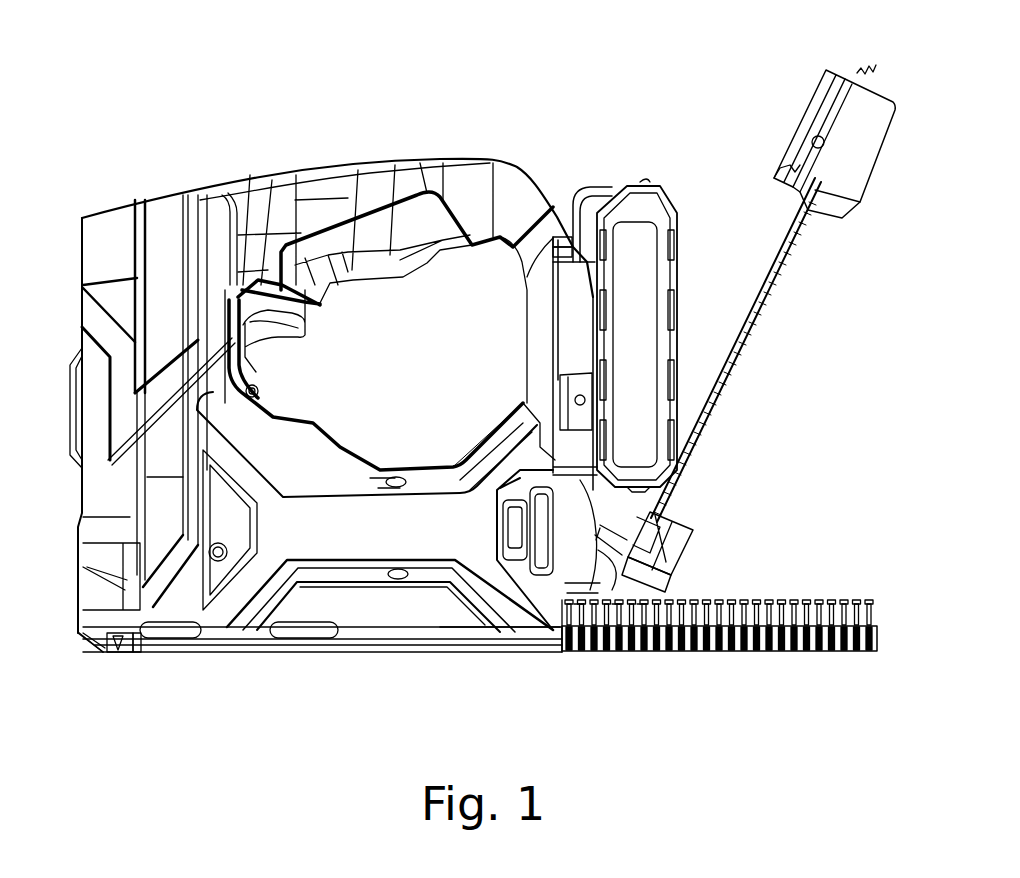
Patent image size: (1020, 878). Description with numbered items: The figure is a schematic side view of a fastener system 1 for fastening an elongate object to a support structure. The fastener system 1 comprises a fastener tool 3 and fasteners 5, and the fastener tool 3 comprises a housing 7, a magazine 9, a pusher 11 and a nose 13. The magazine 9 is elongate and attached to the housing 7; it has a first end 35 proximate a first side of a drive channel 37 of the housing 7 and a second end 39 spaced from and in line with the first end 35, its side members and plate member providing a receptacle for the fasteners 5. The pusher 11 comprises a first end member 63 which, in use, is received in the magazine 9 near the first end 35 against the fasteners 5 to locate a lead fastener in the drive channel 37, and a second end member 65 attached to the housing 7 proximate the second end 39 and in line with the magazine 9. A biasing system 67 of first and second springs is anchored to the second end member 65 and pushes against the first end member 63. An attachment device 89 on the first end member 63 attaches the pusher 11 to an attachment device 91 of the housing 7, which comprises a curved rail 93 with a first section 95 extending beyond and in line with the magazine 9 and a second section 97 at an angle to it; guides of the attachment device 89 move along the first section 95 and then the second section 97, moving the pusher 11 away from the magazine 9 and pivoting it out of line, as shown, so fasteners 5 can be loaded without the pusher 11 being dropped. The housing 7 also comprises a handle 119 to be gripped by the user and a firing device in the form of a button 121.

The fastener system 1 is at (165, 92).
The fastener tool 3 is at (484, 156).
The fasteners 5 is at (836, 655).
The housing 7 is at (470, 434).
The magazine 9 is at (382, 632).
The pusher 11 is at (790, 286).
The nose 13 is at (76, 642).
The first end 35 is at (152, 645).
The drive channel 37 is at (114, 656).
The second end 39 is at (522, 632).
The first end member 63 is at (662, 537).
The second end member 65 is at (838, 72).
The biasing system 67 is at (745, 328).
The attachment device 89 is at (635, 563).
The attachment device 91 is at (622, 524).
The curved rail 93 is at (615, 592).
The first section 95 is at (577, 600).
The second section 97 is at (640, 603).
The handle 119 is at (395, 168).
The button 121 is at (284, 313).